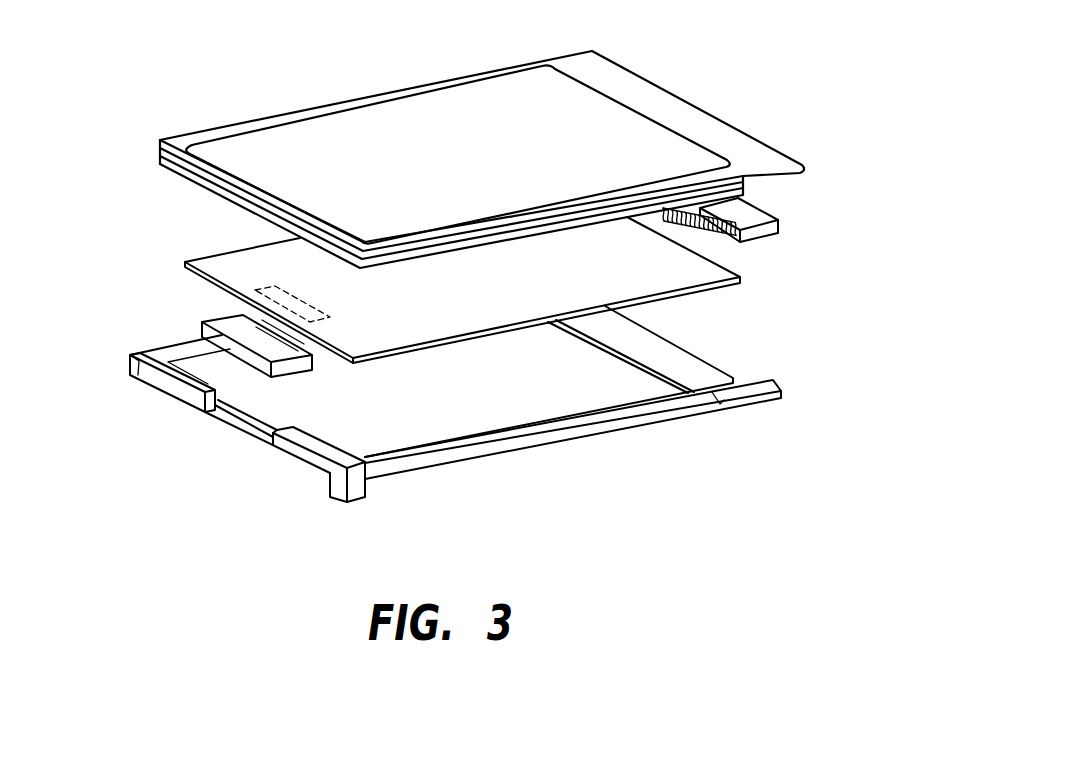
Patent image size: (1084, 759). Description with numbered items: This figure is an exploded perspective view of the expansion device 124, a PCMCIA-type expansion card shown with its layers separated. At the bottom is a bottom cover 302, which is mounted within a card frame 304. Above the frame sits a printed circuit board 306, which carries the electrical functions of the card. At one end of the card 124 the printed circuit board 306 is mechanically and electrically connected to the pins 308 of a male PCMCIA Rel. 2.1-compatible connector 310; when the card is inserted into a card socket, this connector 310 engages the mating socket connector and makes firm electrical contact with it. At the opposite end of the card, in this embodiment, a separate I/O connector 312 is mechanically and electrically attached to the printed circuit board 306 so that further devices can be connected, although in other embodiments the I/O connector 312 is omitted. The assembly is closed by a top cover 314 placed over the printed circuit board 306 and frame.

The expansion device 124 is at (508, 292).
The bottom cover 302 is at (550, 397).
The card frame 304 is at (457, 458).
The printed circuit board 306 is at (650, 276).
The pins 308 is at (718, 238).
The PCMCIA connector 310 is at (747, 214).
The I/O connector 312 is at (231, 320).
The top cover 314 is at (264, 139).